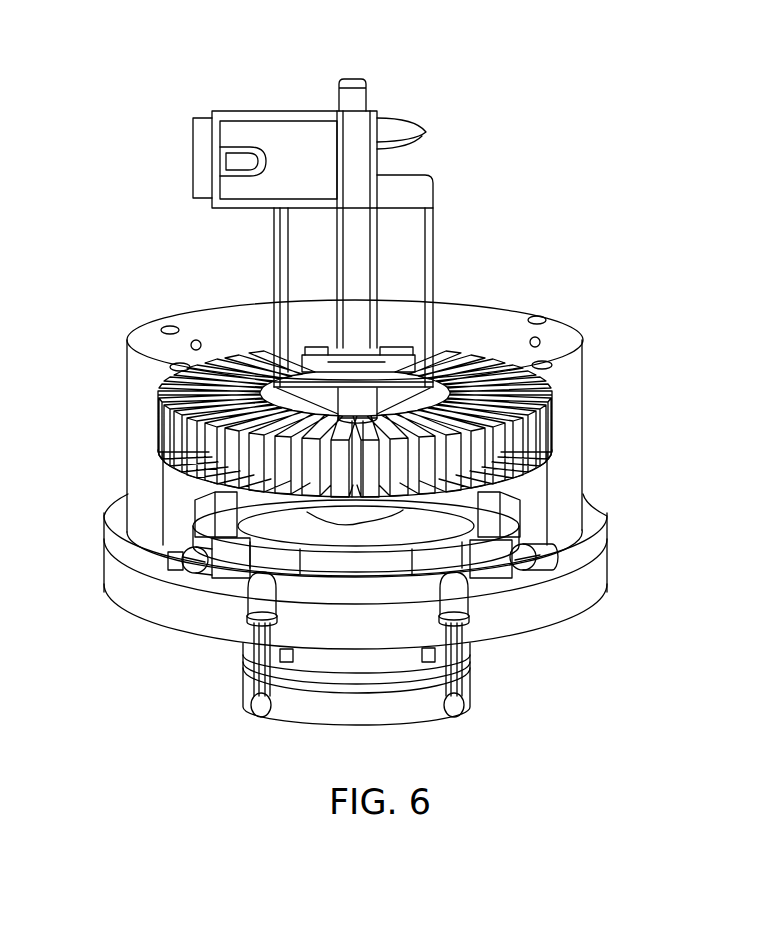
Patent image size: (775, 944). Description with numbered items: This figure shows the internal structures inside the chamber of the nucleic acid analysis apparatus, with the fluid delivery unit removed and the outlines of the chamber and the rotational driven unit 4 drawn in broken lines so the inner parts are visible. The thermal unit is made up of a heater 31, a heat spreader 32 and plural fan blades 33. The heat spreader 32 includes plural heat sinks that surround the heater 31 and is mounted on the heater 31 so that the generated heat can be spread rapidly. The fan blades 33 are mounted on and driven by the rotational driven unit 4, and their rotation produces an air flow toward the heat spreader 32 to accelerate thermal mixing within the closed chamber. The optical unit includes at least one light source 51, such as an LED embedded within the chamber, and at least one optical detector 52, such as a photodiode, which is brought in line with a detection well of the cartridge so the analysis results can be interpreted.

The rotational driven unit 4 is at (412, 193).
The heater 31 is at (472, 513).
The heat spreader 32 is at (510, 455).
The fan blades 33 is at (418, 412).
The light source 51 is at (455, 602).
The optical detector 52 is at (565, 556).